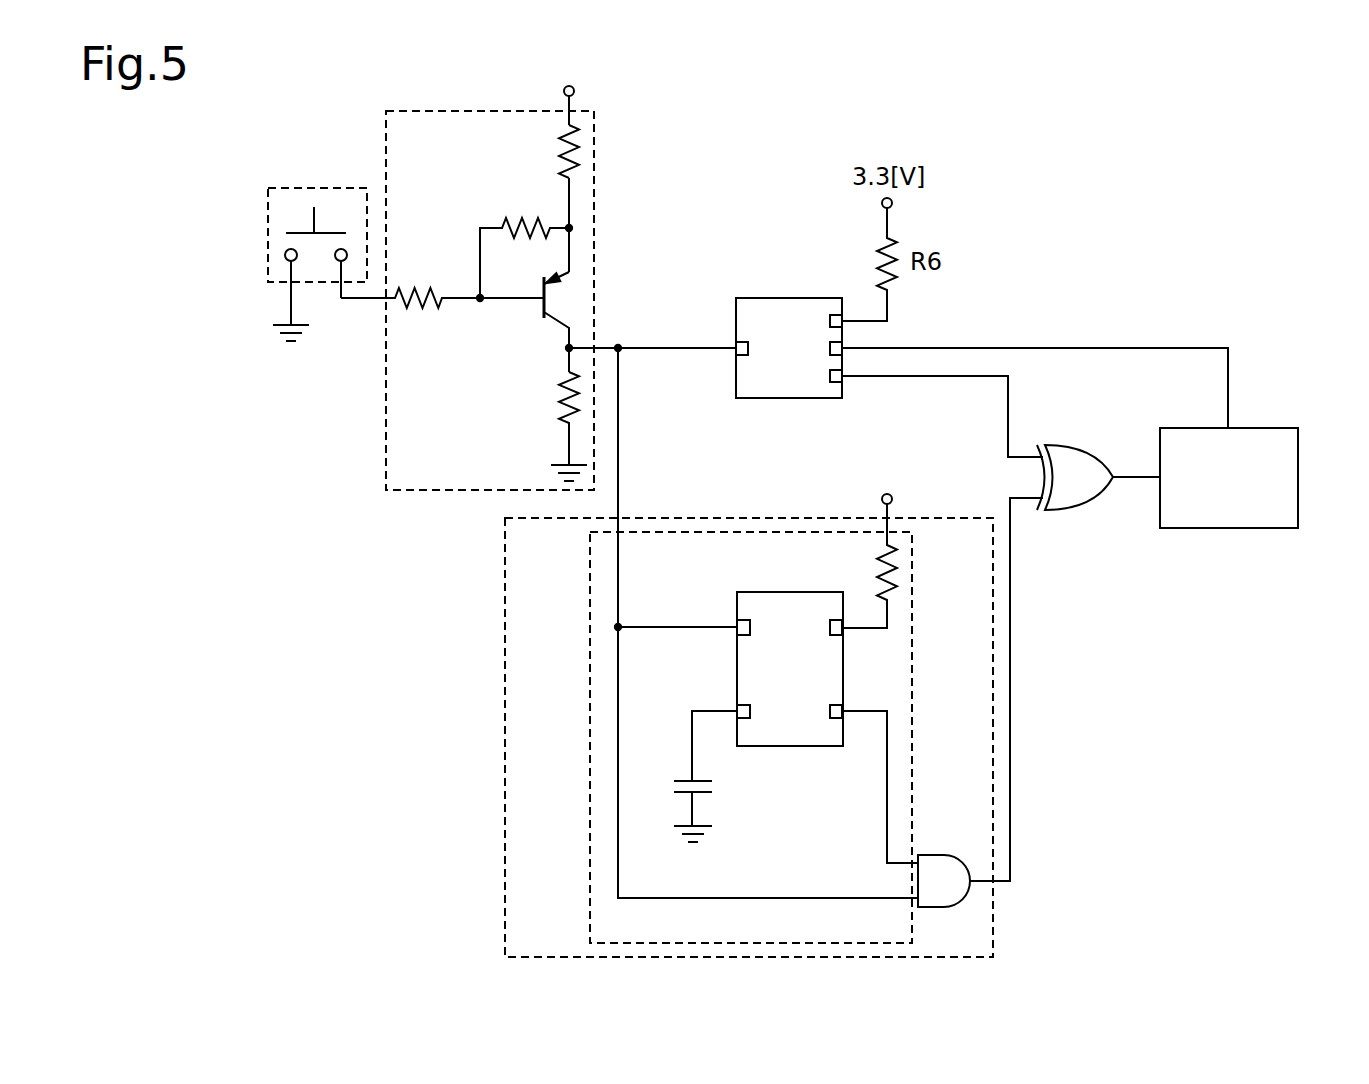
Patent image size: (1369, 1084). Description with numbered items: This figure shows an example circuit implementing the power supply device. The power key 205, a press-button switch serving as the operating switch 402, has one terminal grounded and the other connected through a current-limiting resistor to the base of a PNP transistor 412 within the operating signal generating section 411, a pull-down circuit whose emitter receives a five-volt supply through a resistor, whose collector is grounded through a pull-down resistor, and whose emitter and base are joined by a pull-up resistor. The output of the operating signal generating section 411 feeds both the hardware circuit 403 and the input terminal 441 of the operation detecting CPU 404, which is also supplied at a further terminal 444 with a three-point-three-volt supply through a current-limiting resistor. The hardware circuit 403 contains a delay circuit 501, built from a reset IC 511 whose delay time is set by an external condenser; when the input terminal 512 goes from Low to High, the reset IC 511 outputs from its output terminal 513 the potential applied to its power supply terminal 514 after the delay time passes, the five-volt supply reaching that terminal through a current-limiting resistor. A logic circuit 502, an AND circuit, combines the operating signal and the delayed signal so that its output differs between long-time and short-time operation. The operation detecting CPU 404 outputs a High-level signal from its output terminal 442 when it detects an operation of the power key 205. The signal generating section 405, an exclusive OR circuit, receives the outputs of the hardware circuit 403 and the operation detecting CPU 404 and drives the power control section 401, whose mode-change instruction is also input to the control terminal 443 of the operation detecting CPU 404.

The power key 205 is at (321, 225).
The operating switch 402 is at (279, 183).
The power control section 401 is at (1255, 428).
The hardware circuit 403 is at (503, 572).
The operation detecting CPU 404 is at (748, 298).
The signal generating section 405 is at (1065, 447).
The operating signal generating section 411 is at (413, 111).
The PNP transistor 412 is at (543, 318).
The input terminal 441 is at (738, 342).
The output terminal 442 is at (838, 383).
The control terminal 443 is at (845, 345).
The power supply terminal 444 is at (835, 313).
The delay circuit 501 is at (588, 572).
The logic circuit 502 is at (930, 855).
The reset IC 511 is at (745, 592).
The input terminal 512 is at (737, 620).
The output terminal 513 is at (838, 722).
The power supply terminal 514 is at (737, 705).